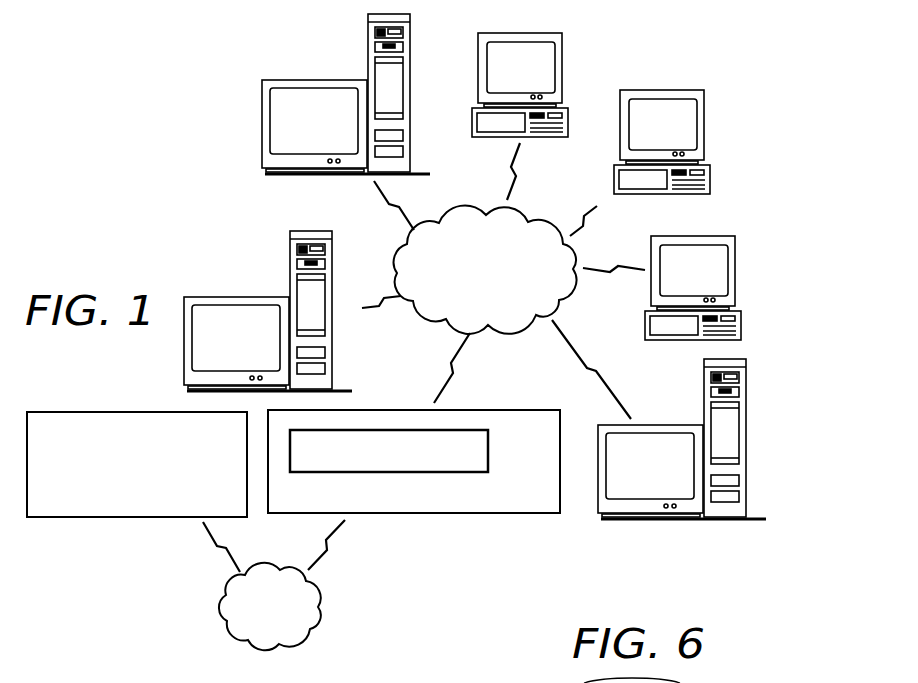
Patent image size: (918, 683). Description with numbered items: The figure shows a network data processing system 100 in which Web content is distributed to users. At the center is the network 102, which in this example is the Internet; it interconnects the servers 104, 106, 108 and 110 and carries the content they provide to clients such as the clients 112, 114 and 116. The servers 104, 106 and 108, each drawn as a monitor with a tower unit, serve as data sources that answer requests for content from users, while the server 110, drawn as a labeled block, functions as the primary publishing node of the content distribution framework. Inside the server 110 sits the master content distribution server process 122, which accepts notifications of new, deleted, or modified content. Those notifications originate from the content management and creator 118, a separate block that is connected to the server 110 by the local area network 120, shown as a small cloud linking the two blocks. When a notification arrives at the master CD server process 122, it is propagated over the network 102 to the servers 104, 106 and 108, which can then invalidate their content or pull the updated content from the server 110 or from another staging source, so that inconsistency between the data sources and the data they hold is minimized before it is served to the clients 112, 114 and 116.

The network data processing system 100 is at (750, 48).
The network 102 is at (509, 299).
The server 104 is at (368, 42).
The server 106 is at (290, 262).
The server 108 is at (752, 437).
The server 110 is at (414, 491).
The client 112 is at (565, 68).
The client 114 is at (707, 125).
The client 116 is at (737, 278).
The content management and creator 118 is at (165, 518).
The local area network 120 is at (232, 640).
The master content distribution server process 122 is at (490, 455).